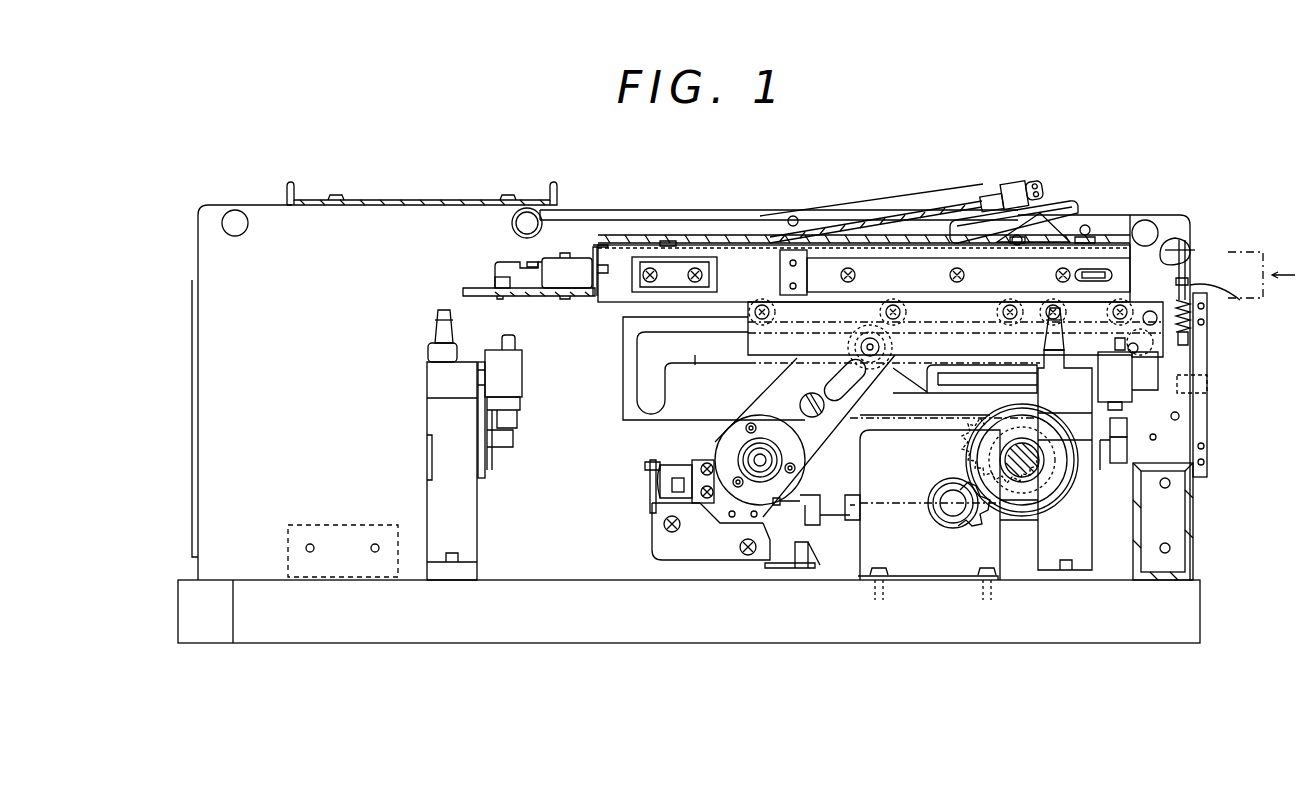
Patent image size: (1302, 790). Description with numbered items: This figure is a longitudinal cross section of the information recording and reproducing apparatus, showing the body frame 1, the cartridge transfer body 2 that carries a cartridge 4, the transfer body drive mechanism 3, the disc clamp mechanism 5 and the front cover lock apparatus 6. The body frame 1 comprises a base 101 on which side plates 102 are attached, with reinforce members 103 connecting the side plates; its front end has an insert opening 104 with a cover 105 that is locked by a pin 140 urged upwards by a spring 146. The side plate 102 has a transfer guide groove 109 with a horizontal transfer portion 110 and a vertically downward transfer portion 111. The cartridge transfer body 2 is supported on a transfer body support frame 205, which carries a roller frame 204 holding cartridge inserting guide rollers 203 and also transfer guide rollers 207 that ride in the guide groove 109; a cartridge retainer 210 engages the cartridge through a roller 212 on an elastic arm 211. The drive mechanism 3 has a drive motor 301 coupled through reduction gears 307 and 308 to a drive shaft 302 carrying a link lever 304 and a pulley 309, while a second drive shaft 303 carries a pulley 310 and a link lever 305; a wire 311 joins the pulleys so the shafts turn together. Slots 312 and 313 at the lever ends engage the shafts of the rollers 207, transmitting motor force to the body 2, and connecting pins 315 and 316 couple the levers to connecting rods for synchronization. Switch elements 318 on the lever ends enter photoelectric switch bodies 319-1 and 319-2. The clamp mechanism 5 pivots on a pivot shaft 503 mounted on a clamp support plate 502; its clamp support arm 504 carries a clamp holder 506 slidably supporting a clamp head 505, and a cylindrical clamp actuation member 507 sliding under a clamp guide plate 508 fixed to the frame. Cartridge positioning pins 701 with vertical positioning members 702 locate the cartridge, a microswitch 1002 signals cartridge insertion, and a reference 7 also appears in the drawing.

The body frame 1 is at (188, 412).
The cartridge transfer body 2 is at (1172, 360).
The transfer body drive mechanism 3 is at (777, 515).
The cartridge 4 is at (1258, 250).
The disc clamp mechanism 5 is at (866, 190).
The front cover lock apparatus 6 is at (1232, 310).
The paper feed block 7 is at (1078, 570).
The base 101 is at (654, 643).
The side plate 102 is at (555, 585).
The reinforce member 103 is at (233, 210).
The insert opening 104 is at (1180, 240).
The cover 105 is at (1186, 268).
The transfer guide groove 109 is at (640, 372).
The horizontal transfer portion 110 is at (695, 374).
The vertically downward transfer portion 111 is at (645, 405).
The pin 140 is at (1240, 300).
The spring 146 is at (1192, 320).
The cartridge inserting guide roller 203 is at (755, 302).
The roller frame 204 is at (790, 262).
The transfer body support frame 205 is at (748, 334).
The transfer guide roller 207 is at (868, 338).
The cartridge retainer 210 is at (1102, 218).
The elastic arm 211 is at (1050, 215).
The roller 212 is at (668, 240).
The drive motor 301 is at (893, 575).
The drive shaft 302 is at (1040, 475).
The drive shaft 303 is at (745, 457).
The link lever 304 is at (1037, 373).
The link lever 305 is at (818, 450).
The reduction gear 307 is at (957, 530).
The reduction gear 308 is at (1038, 505).
The pulley 309 is at (1020, 518).
The pulley 310 is at (730, 437).
The wire 311 is at (905, 505).
The slot 312 is at (1180, 414).
The slot 313 is at (828, 382).
The connecting pin 315 is at (1157, 437).
The connecting pin 316 is at (800, 405).
The switch element 318 is at (680, 493).
The photoelectric switch body 319-1 is at (645, 466).
The photoelectric switch body 319-2 is at (810, 570).
The clamp support plate 502 is at (812, 240).
The pivot shaft 503 is at (793, 216).
The clamp support arm 504 is at (925, 200).
The clamp head 505 is at (1040, 200).
The clamp holder 506 is at (1025, 182).
The clamp actuation member 507 is at (512, 228).
The clamp guide plate 508 is at (432, 200).
The cartridge positioning pin 701 is at (435, 322).
The vertical positioning member 702 is at (428, 350).
The microswitch 1002 is at (578, 258).